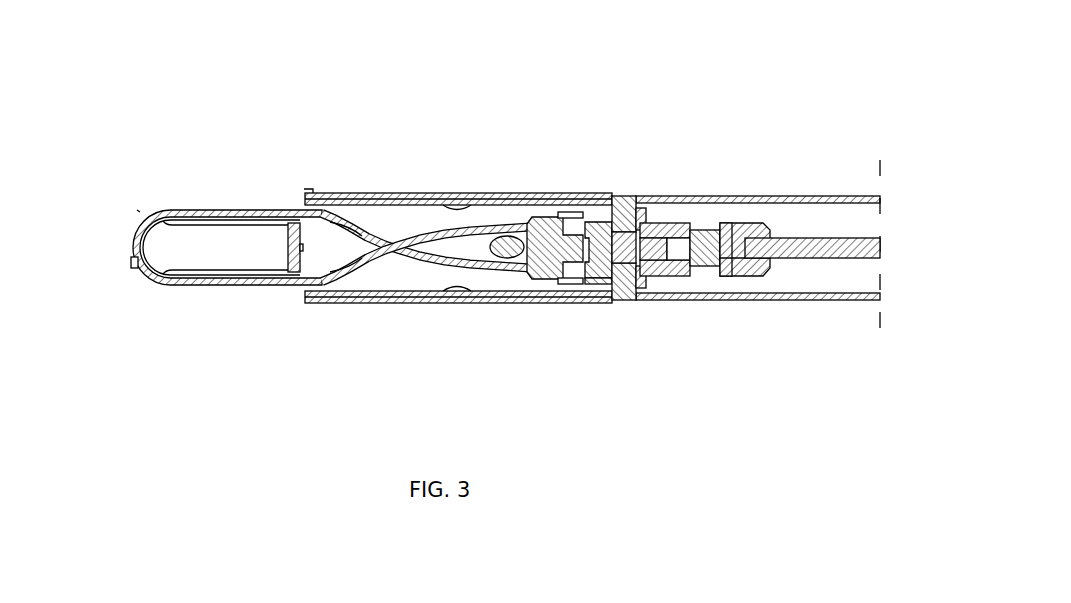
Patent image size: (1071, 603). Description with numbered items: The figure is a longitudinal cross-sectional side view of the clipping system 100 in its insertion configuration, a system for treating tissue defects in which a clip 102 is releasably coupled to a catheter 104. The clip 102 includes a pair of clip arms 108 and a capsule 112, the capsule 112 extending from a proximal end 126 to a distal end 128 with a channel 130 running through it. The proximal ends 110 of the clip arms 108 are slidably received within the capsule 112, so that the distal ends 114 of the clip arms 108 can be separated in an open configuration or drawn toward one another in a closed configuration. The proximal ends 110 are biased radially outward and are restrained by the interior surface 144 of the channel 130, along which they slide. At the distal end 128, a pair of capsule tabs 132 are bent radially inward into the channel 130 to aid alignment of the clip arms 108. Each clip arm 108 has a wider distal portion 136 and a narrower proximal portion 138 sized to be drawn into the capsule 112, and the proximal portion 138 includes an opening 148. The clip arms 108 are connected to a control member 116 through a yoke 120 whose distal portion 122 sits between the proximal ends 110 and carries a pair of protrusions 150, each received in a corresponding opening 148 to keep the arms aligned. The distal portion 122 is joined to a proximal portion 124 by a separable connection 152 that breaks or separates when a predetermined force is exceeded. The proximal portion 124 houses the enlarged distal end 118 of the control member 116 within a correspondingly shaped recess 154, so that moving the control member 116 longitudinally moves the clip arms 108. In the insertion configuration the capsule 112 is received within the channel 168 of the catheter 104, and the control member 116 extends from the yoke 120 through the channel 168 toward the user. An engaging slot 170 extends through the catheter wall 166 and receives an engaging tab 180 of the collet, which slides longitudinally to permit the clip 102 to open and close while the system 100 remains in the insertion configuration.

The clipping system 100 is at (589, 190).
The clip 102 is at (190, 214).
The catheter 104 is at (788, 215).
The clip arms 108 is at (242, 276).
The proximal ends 110 is at (578, 213).
The capsule 112 is at (425, 223).
The distal ends 114 is at (136, 209).
The control member 116 is at (815, 250).
The distal end 118 is at (730, 244).
The yoke 120 is at (648, 208).
The distal portion 122 is at (508, 244).
The proximal portion 124 is at (710, 240).
The proximal end 126 is at (627, 260).
The distal end 128 is at (307, 202).
The channel 130 is at (368, 222).
The capsule tabs 132 is at (286, 290).
The distal portion 136 is at (204, 288).
The proximal portion 138 is at (428, 300).
The interior surface 144 is at (407, 218).
The opening 148 is at (500, 222).
The protrusions 150 is at (553, 213).
The separable connection 152 is at (595, 290).
The recess 154 is at (690, 223).
The wall 166 is at (736, 280).
The channel 168 is at (846, 204).
The engaging slot 170 is at (788, 269).
The engaging tab 180 is at (636, 298).